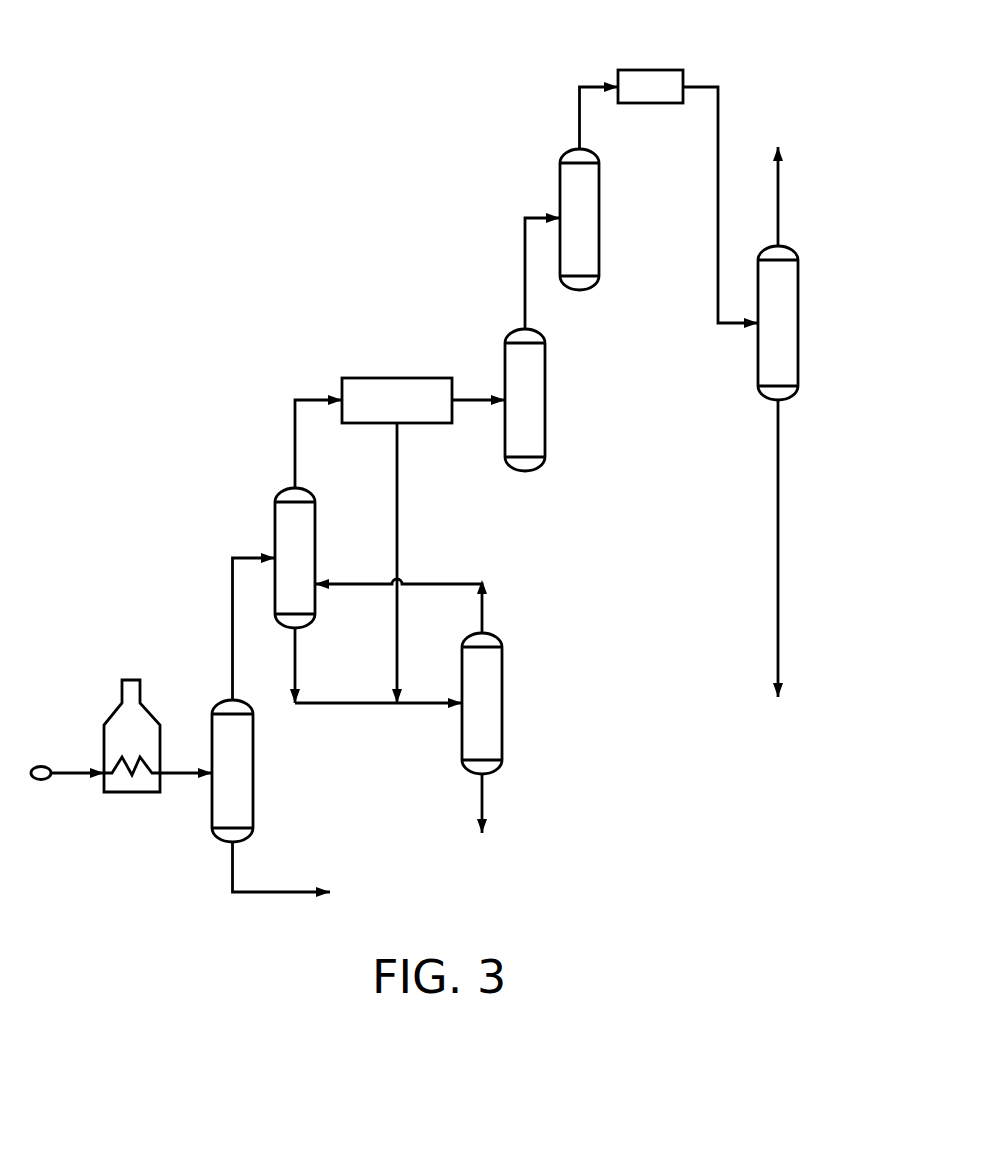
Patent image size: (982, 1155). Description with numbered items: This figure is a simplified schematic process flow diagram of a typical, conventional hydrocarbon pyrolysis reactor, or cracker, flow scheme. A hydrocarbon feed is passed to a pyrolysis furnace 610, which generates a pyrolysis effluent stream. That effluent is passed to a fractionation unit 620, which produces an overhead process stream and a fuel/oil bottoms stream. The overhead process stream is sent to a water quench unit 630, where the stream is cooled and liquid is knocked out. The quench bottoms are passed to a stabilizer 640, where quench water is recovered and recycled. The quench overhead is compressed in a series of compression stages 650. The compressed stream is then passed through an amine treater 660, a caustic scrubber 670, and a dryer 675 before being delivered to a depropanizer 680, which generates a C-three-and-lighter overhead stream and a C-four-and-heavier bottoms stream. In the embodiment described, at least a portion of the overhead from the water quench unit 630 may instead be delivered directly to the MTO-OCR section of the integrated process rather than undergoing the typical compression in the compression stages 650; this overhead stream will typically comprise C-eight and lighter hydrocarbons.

The pyrolysis furnace 610 is at (137, 680).
The fractionation unit 620 is at (253, 772).
The water quench unit 630 is at (275, 526).
The stabilizer 640 is at (502, 702).
The compression stages 650 is at (397, 378).
The amine treater 660 is at (545, 399).
The caustic scrubber 670 is at (599, 217).
The dryer 675 is at (652, 70).
The depropanizer 680 is at (798, 322).